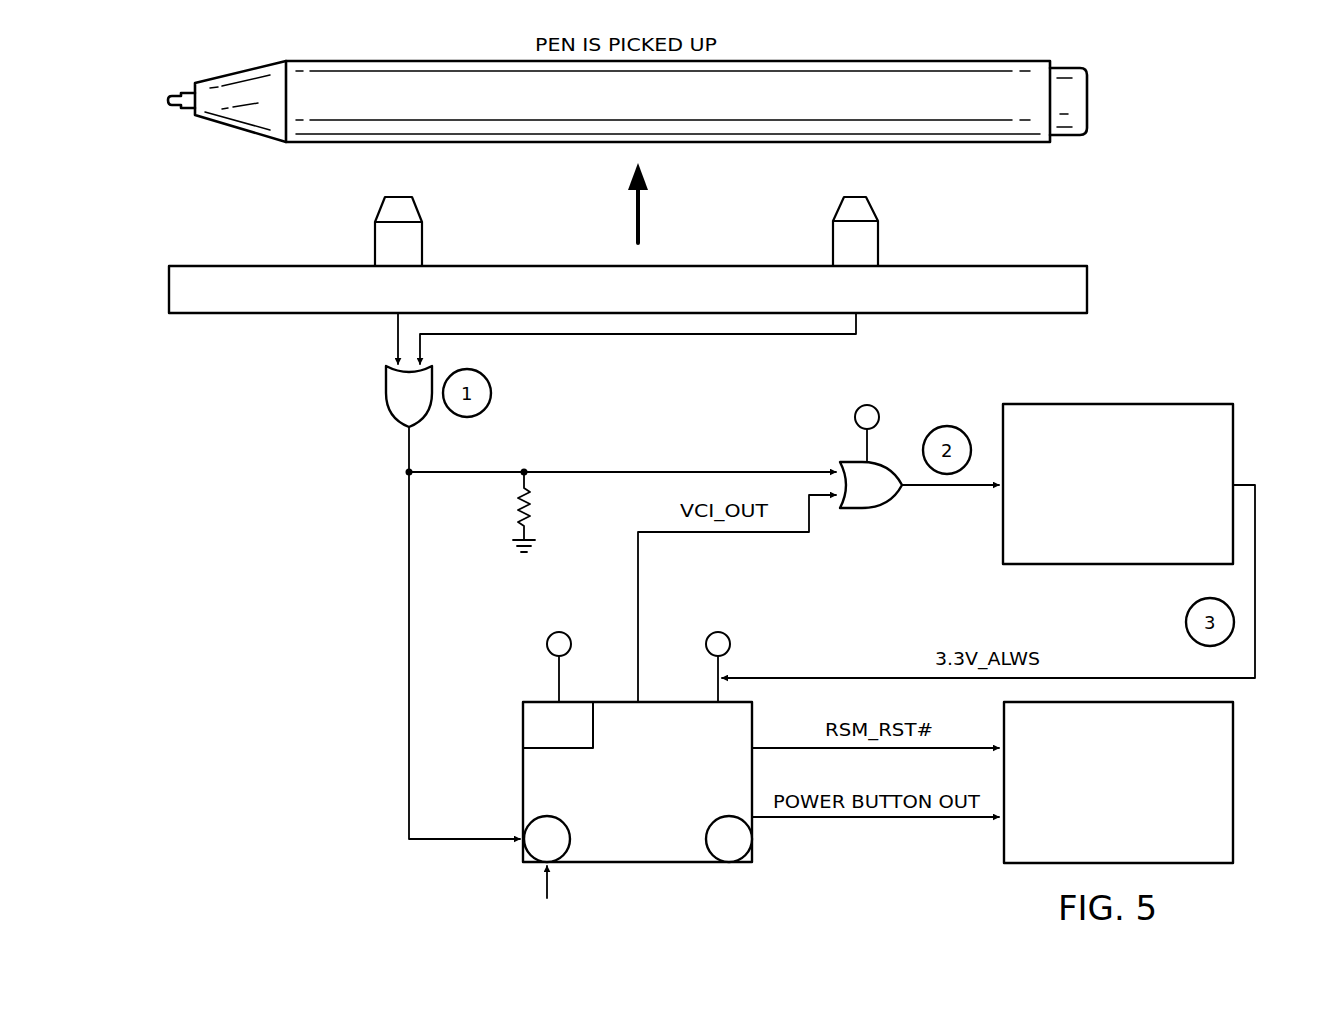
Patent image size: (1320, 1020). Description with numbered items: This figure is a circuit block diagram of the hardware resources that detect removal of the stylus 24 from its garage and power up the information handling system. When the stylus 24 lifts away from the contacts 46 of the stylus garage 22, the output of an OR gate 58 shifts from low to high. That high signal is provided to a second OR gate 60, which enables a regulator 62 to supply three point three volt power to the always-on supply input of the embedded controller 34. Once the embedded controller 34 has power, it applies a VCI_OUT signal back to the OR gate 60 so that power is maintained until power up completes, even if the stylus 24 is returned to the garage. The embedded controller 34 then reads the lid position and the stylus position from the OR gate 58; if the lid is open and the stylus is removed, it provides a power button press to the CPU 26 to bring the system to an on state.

The stylus 24 is at (390, 62).
The stylus garage 22 is at (176, 290).
The contacts 46 is at (380, 243).
The OR gate 58 is at (386, 391).
The OR gate 60 is at (870, 510).
The +3.3V voltage regulator 62 is at (1118, 565).
The embedded controller 34 is at (625, 864).
The CPU 26 is at (1235, 793).